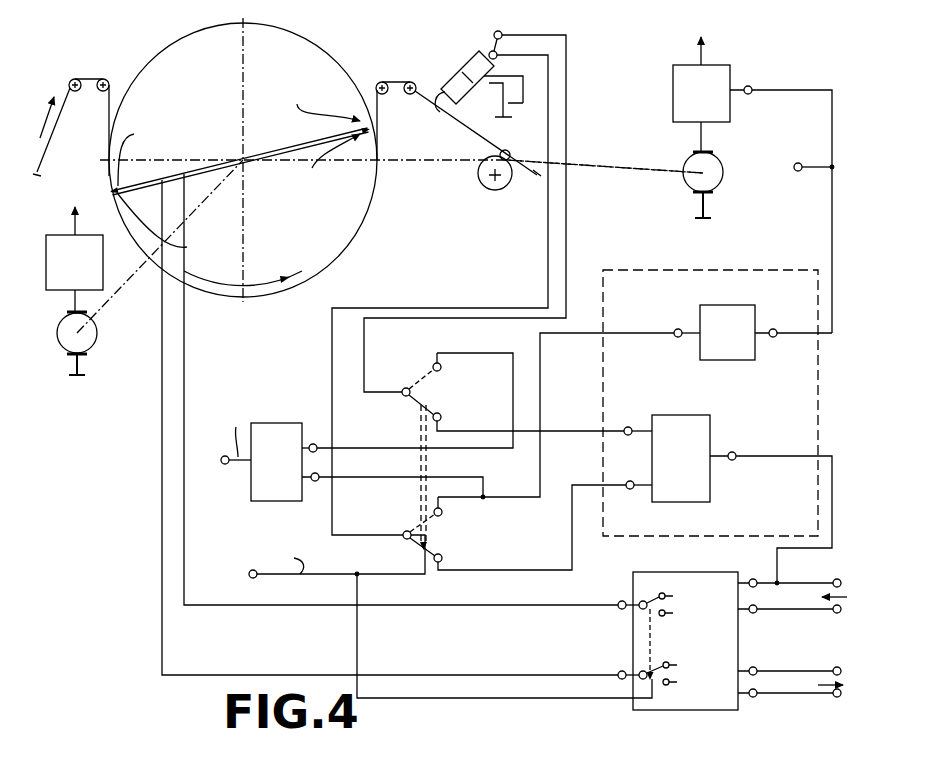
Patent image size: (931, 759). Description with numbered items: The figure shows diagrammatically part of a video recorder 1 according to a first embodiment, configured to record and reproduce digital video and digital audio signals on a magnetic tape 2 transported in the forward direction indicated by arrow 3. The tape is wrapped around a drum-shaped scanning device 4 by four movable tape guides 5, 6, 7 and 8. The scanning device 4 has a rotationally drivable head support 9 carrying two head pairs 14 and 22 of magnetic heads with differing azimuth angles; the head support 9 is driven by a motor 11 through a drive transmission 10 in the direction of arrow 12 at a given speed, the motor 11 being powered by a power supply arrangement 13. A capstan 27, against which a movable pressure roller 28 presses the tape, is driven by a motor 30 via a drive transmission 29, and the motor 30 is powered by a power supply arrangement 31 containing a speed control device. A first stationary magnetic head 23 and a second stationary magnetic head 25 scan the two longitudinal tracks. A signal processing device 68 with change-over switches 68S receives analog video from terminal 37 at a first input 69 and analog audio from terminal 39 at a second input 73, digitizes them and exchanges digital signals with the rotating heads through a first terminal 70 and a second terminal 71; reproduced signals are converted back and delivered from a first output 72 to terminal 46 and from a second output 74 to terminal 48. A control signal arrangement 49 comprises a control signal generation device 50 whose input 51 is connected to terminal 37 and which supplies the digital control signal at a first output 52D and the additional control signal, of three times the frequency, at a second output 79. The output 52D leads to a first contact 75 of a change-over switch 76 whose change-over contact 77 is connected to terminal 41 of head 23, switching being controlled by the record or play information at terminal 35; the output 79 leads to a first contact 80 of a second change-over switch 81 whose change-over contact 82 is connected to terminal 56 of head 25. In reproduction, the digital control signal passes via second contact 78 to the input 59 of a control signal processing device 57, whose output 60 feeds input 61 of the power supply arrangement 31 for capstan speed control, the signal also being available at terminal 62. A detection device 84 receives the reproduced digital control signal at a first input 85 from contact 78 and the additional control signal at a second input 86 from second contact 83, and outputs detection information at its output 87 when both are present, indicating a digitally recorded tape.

The video recorder 1 is at (143, 485).
The magnetic tape 2 is at (52, 130).
The forward direction arrow 3 is at (40, 130).
The drum-shaped scanning device 4 is at (161, 48).
The movable tape guide 5 is at (79, 90).
The movable tape guide 6 is at (105, 79).
The movable tape guide 7 is at (381, 82).
The movable tape guide 8 is at (412, 82).
The rotationally drivable head support 9 is at (282, 44).
The drive transmission 10 is at (145, 264).
The motor 11 is at (96, 335).
The direction arrow 12 is at (205, 281).
The power supply arrangement 13 is at (103, 278).
The head pair 14 is at (104, 196).
The further head pair 22 is at (103, 187).
The first stationary magnetic head 23 is at (446, 113).
The second stationary magnetic head 25 is at (427, 97).
The capstan 27 is at (521, 130).
The movable pressure roller 28 is at (480, 171).
The drive transmission 29 is at (610, 165).
The motor 30 is at (686, 158).
The power supply arrangement 31 is at (673, 88).
The terminal 35 is at (249, 575).
The terminal 37 is at (834, 580).
The terminal 39 is at (838, 612).
The terminal 41 is at (489, 55).
The terminal 46 is at (838, 650).
The terminal 48 is at (838, 697).
The control signal arrangement 49 is at (628, 266).
The control signal generation device 50 is at (710, 487).
The input 51 is at (733, 452).
The first output 52D is at (628, 489).
The terminal 56 is at (500, 32).
The control signal processing device 57 is at (748, 358).
The input 59 is at (677, 329).
The output 60 is at (773, 329).
The input 61 is at (749, 86).
The terminal 62 is at (800, 163).
The signal processing device 68 is at (646, 566).
The change-over switches 68S is at (666, 634).
The first input 69 is at (750, 580).
The first terminal 70 is at (618, 603).
The second terminal 71 is at (619, 672).
The first output 72 is at (766, 652).
The second input 73 is at (756, 612).
The second output 74 is at (752, 697).
The first contact 75 is at (442, 559).
The change-over switch 76 is at (465, 453).
The change-over contact 77 is at (407, 531).
The second contact 78 is at (442, 512).
The second output 79 is at (626, 427).
The first contact 80 is at (441, 418).
The second change-over switch 81 is at (470, 400).
The change-over contact 82 is at (409, 388).
The second contact 83 is at (441, 366).
The detection device 84 is at (348, 454).
The first input 85 is at (315, 481).
The second input 86 is at (313, 444).
The output 87 is at (225, 464).